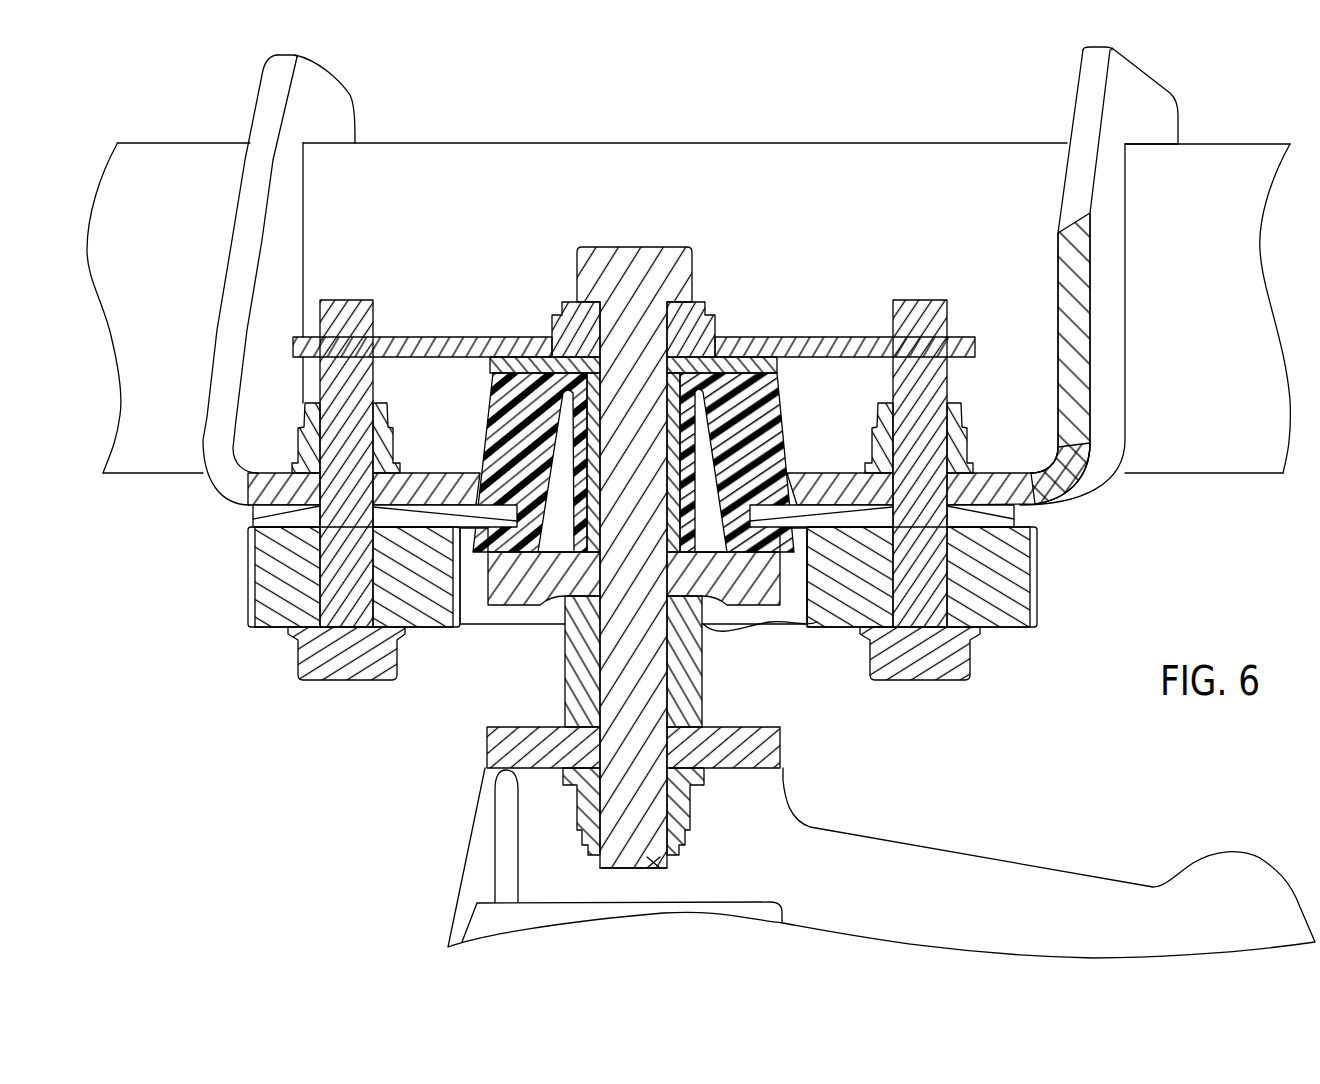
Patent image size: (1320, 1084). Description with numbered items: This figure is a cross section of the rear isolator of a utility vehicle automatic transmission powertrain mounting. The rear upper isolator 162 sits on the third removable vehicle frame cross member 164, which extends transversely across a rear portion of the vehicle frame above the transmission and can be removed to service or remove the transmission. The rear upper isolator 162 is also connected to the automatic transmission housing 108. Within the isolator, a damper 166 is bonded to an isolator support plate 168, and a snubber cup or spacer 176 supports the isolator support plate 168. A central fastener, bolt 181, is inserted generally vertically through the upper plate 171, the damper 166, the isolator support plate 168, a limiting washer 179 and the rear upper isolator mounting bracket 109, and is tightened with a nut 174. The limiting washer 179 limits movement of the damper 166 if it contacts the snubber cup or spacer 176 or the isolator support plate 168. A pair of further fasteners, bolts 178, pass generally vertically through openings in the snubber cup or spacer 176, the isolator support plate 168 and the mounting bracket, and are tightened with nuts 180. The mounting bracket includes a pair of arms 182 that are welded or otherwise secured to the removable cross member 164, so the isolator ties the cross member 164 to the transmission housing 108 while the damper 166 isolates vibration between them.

The automatic transmission housing 108 is at (482, 810).
The rear upper isolator mounting bracket 109 is at (530, 733).
The rear upper isolator 162 is at (630, 207).
The third removable vehicle frame cross member 164 is at (847, 227).
The damper 166 is at (490, 440).
The isolator support plate 168 is at (813, 507).
The upper plate 171 is at (813, 330).
The nut 174 is at (680, 806).
The snubber cup or spacer 176 is at (268, 580).
The bolts 178 is at (345, 650).
The limiting washer 179 is at (757, 578).
The nuts 180 is at (384, 428).
The bolt 181 is at (665, 868).
The arms 182 is at (313, 100).